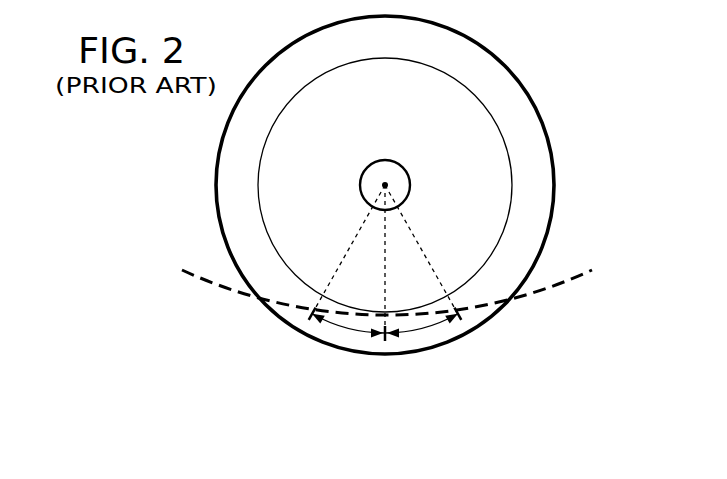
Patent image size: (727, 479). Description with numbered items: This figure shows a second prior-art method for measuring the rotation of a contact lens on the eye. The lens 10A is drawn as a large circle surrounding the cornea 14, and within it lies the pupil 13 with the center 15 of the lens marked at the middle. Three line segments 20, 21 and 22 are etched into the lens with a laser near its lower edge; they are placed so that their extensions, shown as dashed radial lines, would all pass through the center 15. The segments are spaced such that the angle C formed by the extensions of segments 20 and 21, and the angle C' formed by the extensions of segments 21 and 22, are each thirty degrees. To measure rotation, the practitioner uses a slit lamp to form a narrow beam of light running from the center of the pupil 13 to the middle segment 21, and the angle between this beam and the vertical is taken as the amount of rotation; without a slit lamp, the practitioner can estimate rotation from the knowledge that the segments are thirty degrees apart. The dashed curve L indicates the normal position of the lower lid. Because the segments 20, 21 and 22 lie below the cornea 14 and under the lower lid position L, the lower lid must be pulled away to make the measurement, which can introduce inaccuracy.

The lens 10A is at (552, 126).
The cornea 14 is at (512, 194).
The pupil 13 is at (410, 184).
The center 15 is at (386, 184).
The line segment 20 is at (310, 318).
The line segment 22 is at (460, 318).
The middle segment 21 is at (385, 341).
The angle C is at (348, 357).
The angle C' is at (421, 357).
The normal position of the lower lid L is at (568, 280).